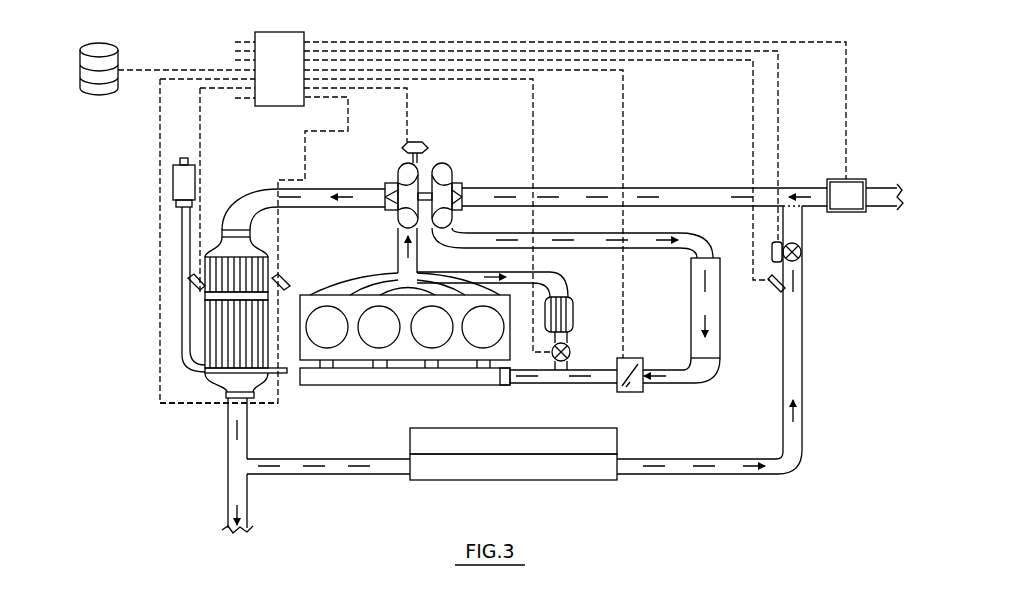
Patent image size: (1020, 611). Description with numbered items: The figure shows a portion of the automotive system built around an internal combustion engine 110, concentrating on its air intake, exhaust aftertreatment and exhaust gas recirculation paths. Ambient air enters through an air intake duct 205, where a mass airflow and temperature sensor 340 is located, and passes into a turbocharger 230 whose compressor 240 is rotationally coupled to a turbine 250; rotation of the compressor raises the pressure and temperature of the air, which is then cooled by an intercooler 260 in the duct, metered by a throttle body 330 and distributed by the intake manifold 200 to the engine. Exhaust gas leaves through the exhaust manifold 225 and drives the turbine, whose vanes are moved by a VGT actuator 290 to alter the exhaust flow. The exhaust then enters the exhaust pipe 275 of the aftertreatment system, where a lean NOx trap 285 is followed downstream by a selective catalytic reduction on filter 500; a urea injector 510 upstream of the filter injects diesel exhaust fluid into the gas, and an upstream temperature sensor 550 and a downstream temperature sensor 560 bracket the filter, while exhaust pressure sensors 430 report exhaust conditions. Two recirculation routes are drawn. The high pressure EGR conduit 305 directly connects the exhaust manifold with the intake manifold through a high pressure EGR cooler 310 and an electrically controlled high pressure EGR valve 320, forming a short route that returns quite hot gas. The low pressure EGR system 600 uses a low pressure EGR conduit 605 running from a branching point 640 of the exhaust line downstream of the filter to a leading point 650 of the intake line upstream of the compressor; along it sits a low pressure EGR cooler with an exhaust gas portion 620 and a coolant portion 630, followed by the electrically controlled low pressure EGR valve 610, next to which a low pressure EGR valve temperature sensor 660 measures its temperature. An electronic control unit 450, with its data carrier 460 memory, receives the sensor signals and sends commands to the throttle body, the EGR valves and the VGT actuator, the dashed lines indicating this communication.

The internal combustion engine 110 is at (500, 384).
The intake manifold 200 is at (403, 385).
The air intake duct 205 is at (655, 187).
The exhaust manifold 225 is at (345, 280).
The turbocharger 230 is at (444, 149).
The compressor 240 is at (450, 170).
The turbine 250 is at (398, 172).
The intercooler 260 is at (720, 346).
The exhaust pipe 275 is at (206, 411).
The lean NOx trap 285 is at (213, 267).
The VGT actuator 290 is at (405, 147).
The high pressure EGR conduit 305 is at (703, 372).
The high pressure EGR cooler 310 is at (573, 312).
The high pressure EGR valve 320 is at (569, 352).
The throttle body 330 is at (643, 390).
The mass airflow and temperature sensor 340 is at (848, 180).
The exhaust pressure sensor 430 is at (172, 183).
The electronic control unit 450 is at (268, 86).
The data carrier 460 is at (78, 70).
The selective catalytic reduction on filter 500 is at (210, 332).
The urea injector 510 is at (282, 282).
The upstream temperature sensor 550 is at (203, 293).
The downstream temperature sensor 560 is at (280, 373).
The secondary air system 600 is at (820, 415).
The low pressure EGR conduit 605 is at (795, 465).
The low pressure EGR valve 610 is at (802, 252).
The exhaust gas portion of low pressure EGR cooler 620 is at (497, 478).
The coolant portion of low pressure EGR cooler 630 is at (497, 452).
The branching point 640 is at (248, 476).
The leading point 650 is at (805, 212).
The low pressure EGR valve temperature sensor 660 is at (778, 289).